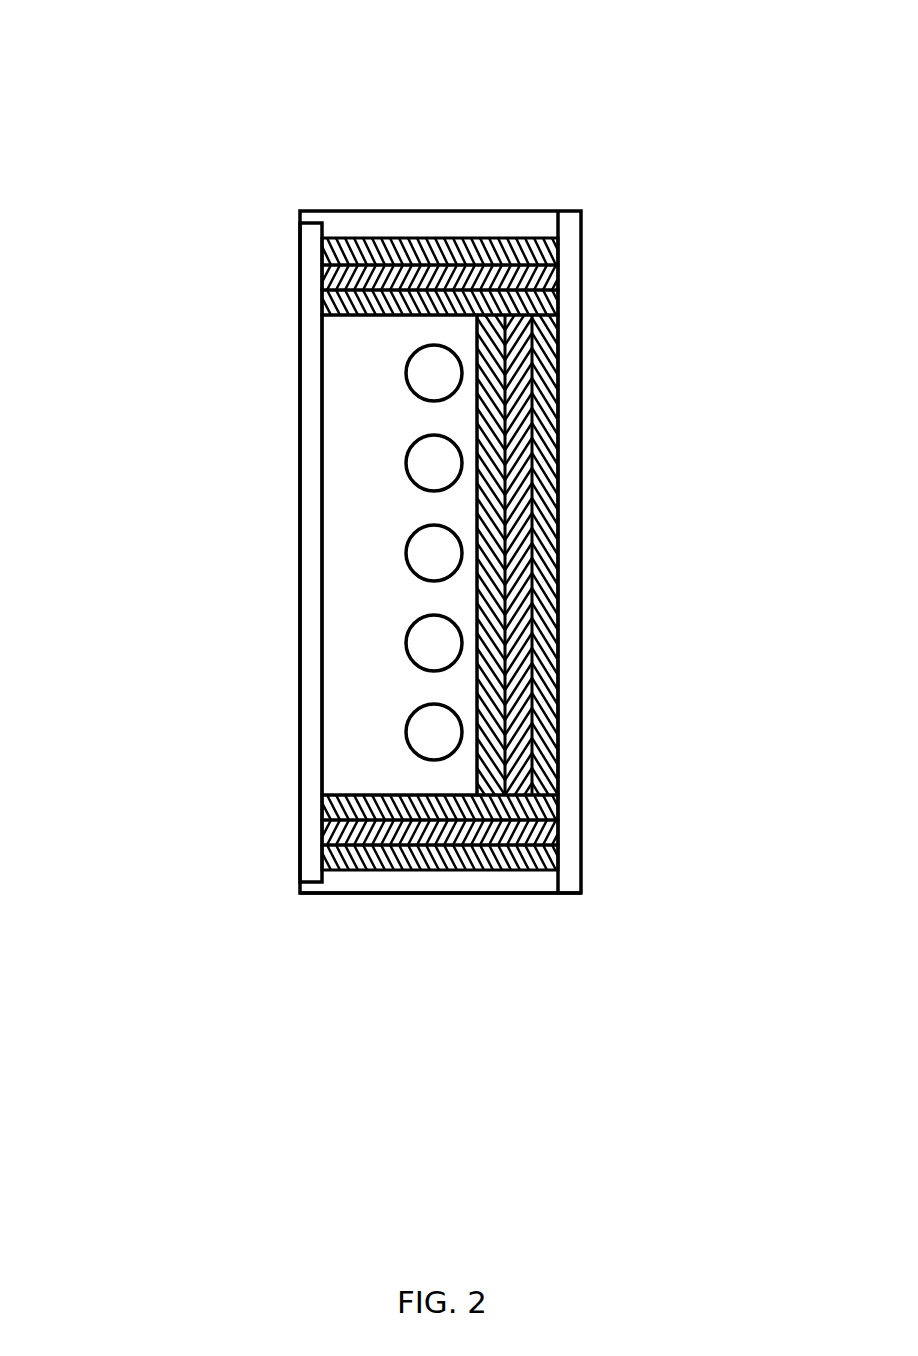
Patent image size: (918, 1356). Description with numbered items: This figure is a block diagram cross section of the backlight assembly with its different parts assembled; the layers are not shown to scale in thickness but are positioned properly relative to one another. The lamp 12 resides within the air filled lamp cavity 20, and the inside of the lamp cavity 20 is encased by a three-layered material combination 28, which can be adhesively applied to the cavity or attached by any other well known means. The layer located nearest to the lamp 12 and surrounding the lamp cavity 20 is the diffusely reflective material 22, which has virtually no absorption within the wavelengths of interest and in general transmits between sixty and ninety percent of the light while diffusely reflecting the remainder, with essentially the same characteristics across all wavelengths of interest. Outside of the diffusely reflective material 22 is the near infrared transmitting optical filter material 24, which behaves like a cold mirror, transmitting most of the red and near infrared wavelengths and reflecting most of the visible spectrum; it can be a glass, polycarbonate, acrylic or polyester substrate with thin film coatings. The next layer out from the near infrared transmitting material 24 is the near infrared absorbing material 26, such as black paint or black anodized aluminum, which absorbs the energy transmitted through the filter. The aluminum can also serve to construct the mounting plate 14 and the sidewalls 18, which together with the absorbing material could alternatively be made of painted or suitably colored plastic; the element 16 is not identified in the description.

The lamp 12 is at (408, 387).
The mounting plate 14 is at (582, 734).
The left end wall 16 is at (299, 272).
The sidewalls 18 is at (443, 894).
The lamp cavity 20 is at (350, 760).
The diffusely reflective material 22 is at (397, 300).
The near infrared transmitting optical filter material 24 is at (477, 273).
The near infrared absorbing material 26 is at (554, 446).
The three-layered material combination 28 is at (454, 232).